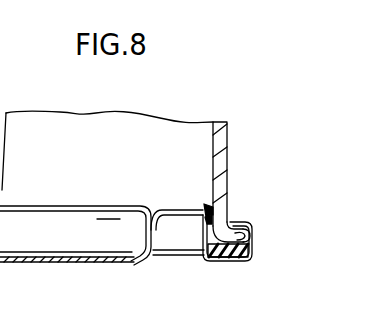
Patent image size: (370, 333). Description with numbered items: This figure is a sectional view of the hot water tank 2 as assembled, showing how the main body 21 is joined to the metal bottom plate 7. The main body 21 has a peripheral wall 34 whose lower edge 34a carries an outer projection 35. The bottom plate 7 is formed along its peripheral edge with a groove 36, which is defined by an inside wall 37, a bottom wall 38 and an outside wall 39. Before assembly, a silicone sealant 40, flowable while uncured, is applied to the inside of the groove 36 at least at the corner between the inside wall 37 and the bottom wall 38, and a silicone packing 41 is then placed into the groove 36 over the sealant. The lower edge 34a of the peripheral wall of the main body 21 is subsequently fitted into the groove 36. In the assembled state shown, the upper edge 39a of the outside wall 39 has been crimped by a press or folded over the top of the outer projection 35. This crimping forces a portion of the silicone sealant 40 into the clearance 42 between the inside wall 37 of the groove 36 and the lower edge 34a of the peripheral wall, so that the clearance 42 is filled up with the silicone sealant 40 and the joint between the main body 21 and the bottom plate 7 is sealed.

The hot water tank 2 is at (68, 120).
The metal bottom plate 7 is at (52, 263).
The main body 21 is at (268, 136).
The peripheral wall 34 is at (227, 158).
The lower edge of peripheral wall 34a is at (228, 196).
The outer projection 35 is at (247, 233).
The groove 36 is at (205, 260).
The inside wall 37 is at (186, 214).
The bottom wall 38 is at (221, 258).
The outside wall 39 is at (253, 242).
The upper edge of outside wall 39a is at (243, 225).
The silicone sealant 40 is at (206, 205).
The silicone packing 41 is at (252, 258).
The clearance 42 is at (203, 233).